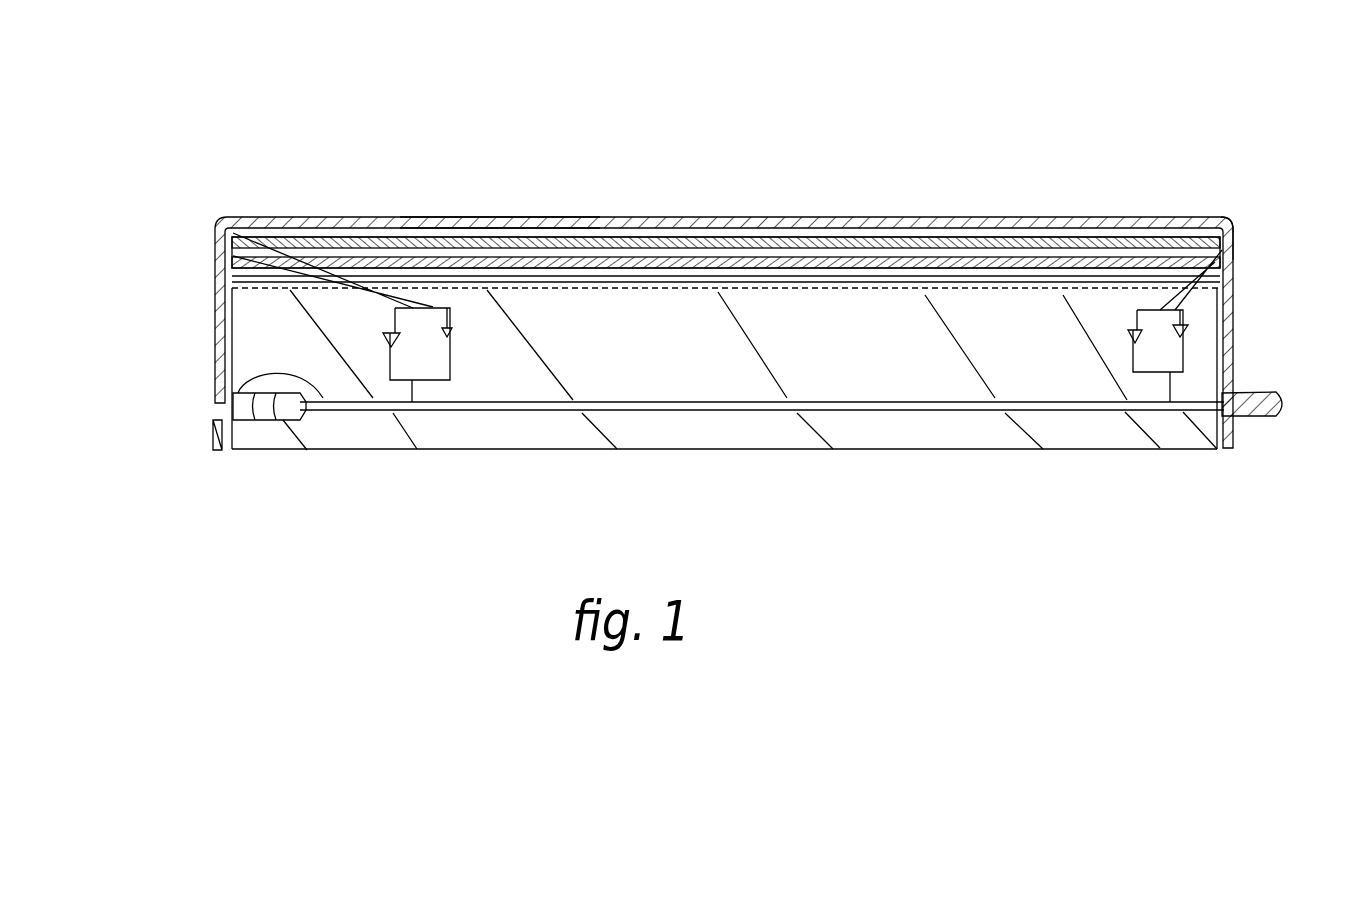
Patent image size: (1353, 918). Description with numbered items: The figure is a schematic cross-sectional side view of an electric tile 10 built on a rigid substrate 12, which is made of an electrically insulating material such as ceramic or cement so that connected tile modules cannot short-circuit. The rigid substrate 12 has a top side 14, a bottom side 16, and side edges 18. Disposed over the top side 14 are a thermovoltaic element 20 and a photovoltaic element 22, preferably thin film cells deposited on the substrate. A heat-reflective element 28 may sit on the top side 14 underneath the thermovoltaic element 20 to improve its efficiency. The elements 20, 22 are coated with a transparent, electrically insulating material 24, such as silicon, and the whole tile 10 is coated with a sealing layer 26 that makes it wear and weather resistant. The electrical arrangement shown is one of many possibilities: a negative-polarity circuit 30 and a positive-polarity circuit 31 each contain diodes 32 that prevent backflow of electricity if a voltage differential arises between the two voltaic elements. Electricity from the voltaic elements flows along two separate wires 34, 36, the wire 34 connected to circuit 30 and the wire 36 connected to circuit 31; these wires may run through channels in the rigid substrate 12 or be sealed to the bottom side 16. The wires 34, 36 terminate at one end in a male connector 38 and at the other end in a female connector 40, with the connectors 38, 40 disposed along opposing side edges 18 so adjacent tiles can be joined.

The electric tile 10 is at (706, 143).
The rigid substrate 12 is at (882, 385).
The top side 14 is at (222, 262).
The bottom side 16 is at (370, 449).
The side edges 18 is at (222, 308).
The thermovoltaic element 20 is at (1238, 240).
The photovoltaic element 22 is at (1084, 241).
The transparent, electrically insulating material 24 is at (345, 230).
The sealing layer 26 is at (478, 218).
The heat-reflective element 28 is at (1188, 300).
The circuit 30 is at (1202, 321).
The circuit 31 is at (464, 349).
The diodes 32 is at (390, 333).
The wire 34 is at (232, 380).
The wire 36 is at (1115, 412).
The male connector 38 is at (1258, 418).
The female connector 40 is at (250, 398).